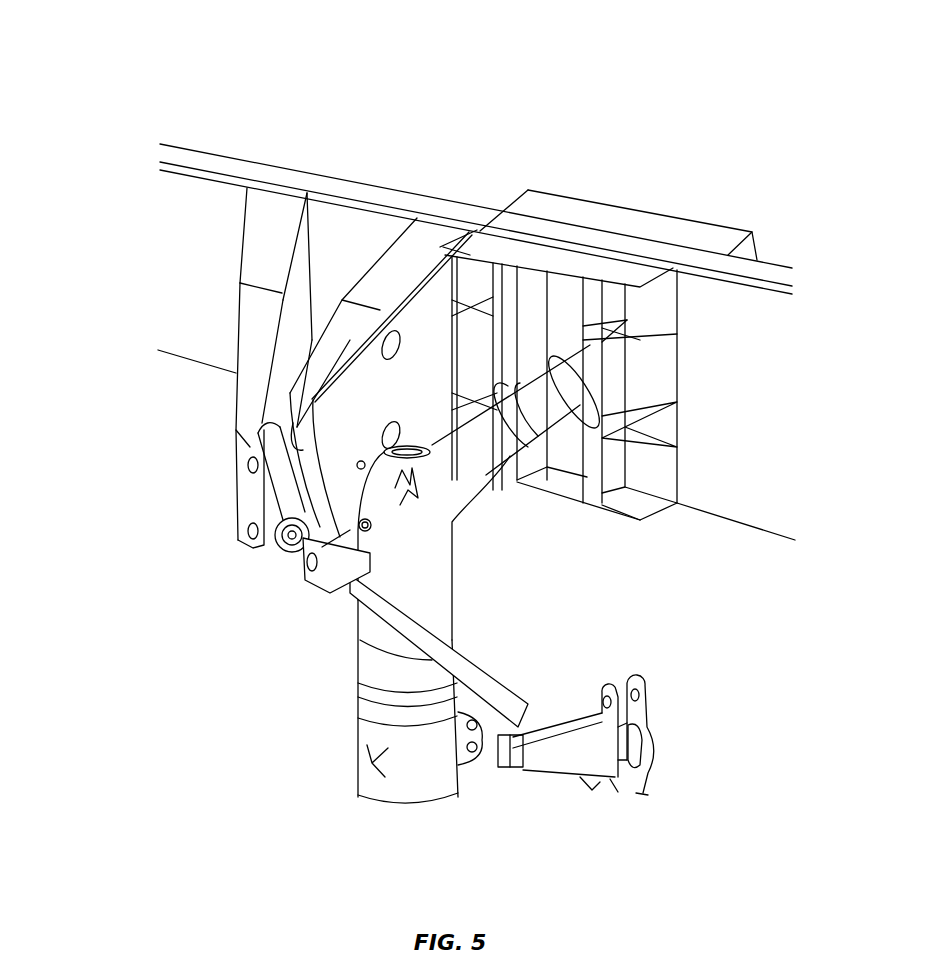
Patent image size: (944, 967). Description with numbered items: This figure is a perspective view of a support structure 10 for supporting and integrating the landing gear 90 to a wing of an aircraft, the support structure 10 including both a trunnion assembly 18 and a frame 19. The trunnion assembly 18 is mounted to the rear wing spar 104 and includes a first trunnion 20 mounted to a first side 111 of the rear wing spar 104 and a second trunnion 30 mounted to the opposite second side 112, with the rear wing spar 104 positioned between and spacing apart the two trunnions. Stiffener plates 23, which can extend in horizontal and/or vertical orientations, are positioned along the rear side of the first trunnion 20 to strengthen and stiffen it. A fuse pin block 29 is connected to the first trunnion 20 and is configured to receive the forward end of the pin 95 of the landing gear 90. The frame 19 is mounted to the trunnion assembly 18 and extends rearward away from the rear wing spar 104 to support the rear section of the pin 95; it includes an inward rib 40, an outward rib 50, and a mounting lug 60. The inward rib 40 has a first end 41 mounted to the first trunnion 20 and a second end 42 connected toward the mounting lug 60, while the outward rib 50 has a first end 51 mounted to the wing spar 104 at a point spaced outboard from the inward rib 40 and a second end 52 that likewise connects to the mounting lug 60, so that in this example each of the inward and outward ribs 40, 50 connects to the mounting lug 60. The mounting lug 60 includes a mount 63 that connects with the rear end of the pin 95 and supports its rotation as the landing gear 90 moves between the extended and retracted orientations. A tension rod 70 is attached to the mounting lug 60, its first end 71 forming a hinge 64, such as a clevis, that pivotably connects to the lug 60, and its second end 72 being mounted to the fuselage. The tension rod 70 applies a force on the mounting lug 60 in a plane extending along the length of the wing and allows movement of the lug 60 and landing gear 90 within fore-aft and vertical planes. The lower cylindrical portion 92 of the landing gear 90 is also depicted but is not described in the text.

The support structure 10 is at (158, 256).
The trunnion assembly 18 is at (682, 128).
The frame 19 is at (374, 115).
The first trunnion 20 is at (587, 267).
The stiffener plates 23 is at (478, 410).
The fuse pin block 29 is at (602, 329).
The second trunnion 30 is at (633, 228).
The inward rib 40 is at (400, 268).
The first end 41 is at (443, 233).
The second end 42 is at (297, 448).
The outward rib 50 is at (257, 237).
The first end 51 is at (267, 207).
The second end 52 is at (260, 453).
The mounting lug 60 is at (302, 478).
The mount 63 is at (300, 535).
The hinge 64 is at (310, 570).
The tension rod 70 is at (365, 595).
The first end 71 is at (317, 577).
The second end 72 is at (545, 725).
The landing gear 90 is at (588, 610).
The vertical tube 92 is at (398, 670).
The pin 95 is at (447, 485).
The rear wing spar 104 is at (740, 373).
The first side 111 is at (748, 297).
The second side 112 is at (762, 257).